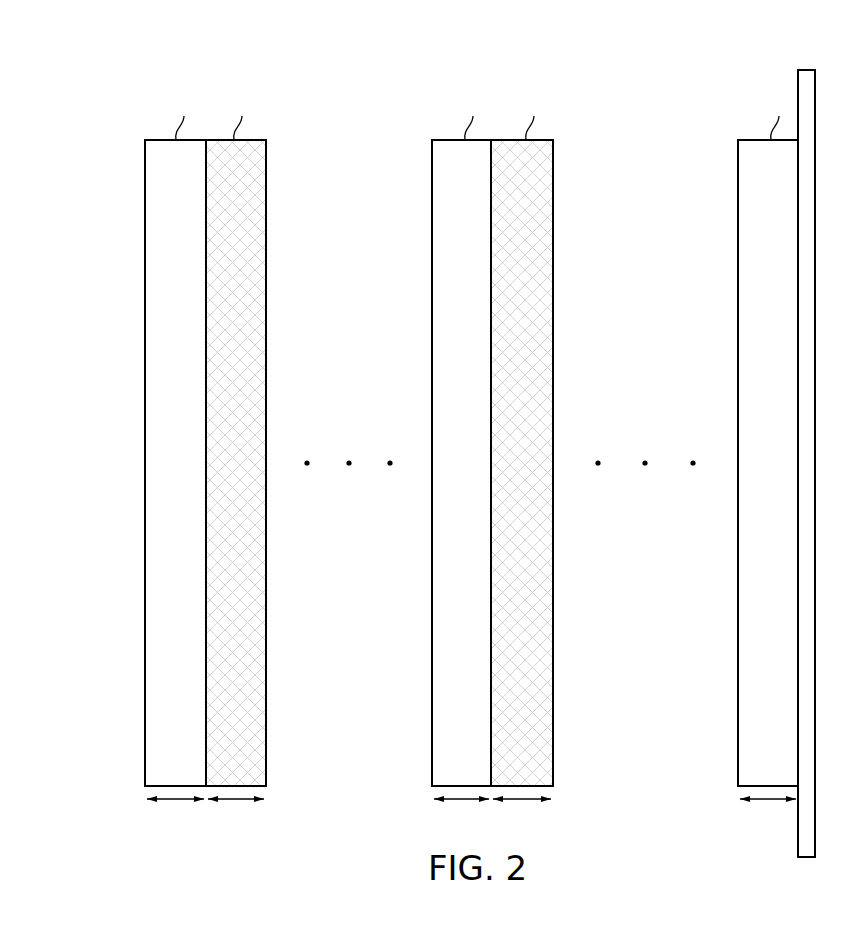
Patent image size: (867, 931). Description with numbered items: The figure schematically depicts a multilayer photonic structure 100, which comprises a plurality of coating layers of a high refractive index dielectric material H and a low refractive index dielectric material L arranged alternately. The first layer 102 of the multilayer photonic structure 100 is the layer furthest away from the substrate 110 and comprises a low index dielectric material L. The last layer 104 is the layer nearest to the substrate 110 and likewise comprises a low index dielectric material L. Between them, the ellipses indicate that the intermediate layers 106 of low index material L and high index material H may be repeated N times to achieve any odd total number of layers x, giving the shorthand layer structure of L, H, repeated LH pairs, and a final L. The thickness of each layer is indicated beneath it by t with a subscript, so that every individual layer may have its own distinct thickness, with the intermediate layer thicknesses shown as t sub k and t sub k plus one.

The multilayer photonic structure 100 is at (104, 110).
The first layer 102 is at (145, 322).
The last layer 104 is at (738, 322).
The intermediate layers 106 is at (422, 317).
The substrate 110 is at (806, 70).